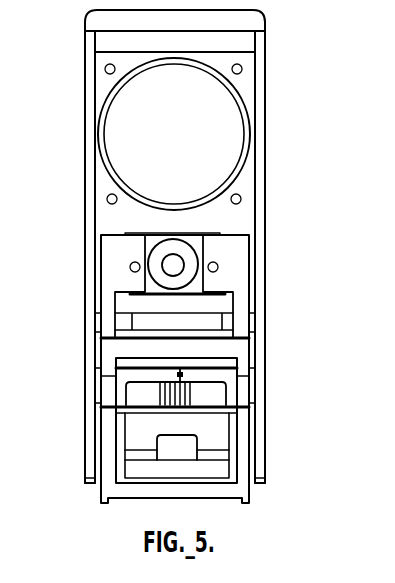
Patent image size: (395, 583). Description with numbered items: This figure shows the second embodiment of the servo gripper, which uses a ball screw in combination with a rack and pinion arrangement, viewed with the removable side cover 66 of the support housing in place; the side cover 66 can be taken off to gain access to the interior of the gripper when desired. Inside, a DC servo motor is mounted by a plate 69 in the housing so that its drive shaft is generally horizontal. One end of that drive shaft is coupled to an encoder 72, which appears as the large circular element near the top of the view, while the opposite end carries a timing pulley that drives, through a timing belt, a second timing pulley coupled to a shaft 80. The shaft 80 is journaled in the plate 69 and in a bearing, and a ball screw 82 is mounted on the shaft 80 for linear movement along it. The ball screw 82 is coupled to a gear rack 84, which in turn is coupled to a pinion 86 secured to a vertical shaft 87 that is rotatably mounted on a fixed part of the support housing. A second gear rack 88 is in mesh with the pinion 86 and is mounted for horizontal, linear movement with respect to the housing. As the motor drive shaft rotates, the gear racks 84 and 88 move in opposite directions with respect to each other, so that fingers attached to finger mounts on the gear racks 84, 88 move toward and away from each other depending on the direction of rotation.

The side cover 66 is at (85, 390).
The plate 69 is at (140, 220).
The encoder 72 is at (232, 143).
The shaft 80 is at (173, 269).
The ball screw 82 is at (187, 253).
The gear rack 84 is at (218, 397).
The pinion 86 is at (192, 395).
The vertical shaft 87 is at (184, 373).
The second gear rack 88 is at (140, 392).